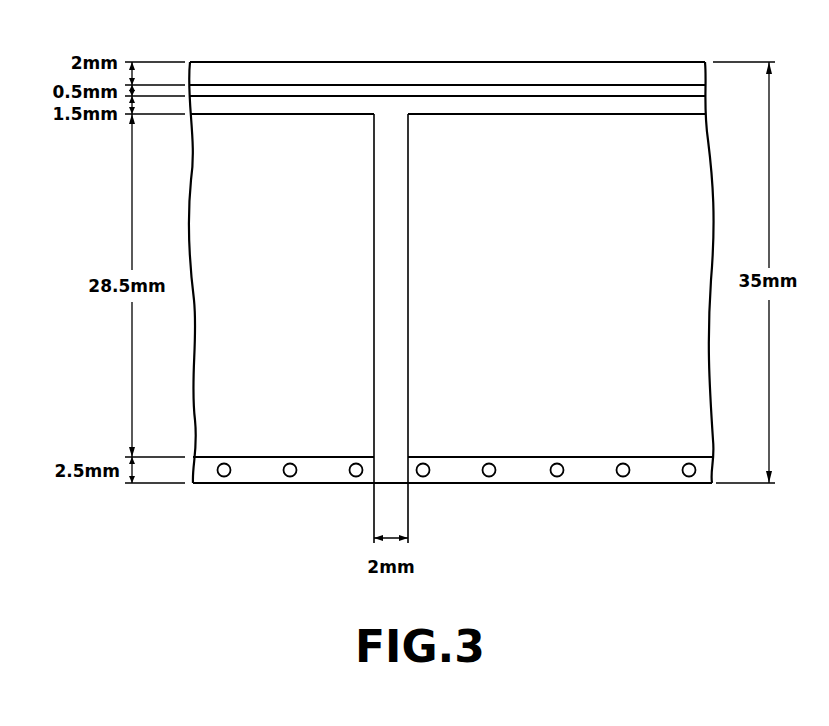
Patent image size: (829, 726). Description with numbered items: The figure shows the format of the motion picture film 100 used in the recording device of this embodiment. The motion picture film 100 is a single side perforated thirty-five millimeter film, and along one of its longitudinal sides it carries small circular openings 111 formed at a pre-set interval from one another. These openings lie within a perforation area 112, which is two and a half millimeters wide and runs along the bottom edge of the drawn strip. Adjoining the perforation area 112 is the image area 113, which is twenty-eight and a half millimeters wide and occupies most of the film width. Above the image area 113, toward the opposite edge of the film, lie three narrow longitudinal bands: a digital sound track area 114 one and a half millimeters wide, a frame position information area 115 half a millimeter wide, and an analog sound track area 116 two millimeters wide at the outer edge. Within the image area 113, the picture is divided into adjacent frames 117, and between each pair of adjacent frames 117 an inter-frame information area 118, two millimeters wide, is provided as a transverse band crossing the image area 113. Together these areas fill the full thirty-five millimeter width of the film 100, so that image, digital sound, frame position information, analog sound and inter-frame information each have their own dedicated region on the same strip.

The motion picture film 100 is at (200, 531).
The small circular openings 111 is at (356, 478).
The perforation area 112 is at (533, 476).
The image area 113 is at (662, 439).
The digital sound track area 114 is at (266, 104).
The frame position information area 115 is at (492, 91).
The analog sound track area 116 is at (609, 79).
The frames 117 is at (352, 307).
The inter-frame information area 118 is at (388, 130).